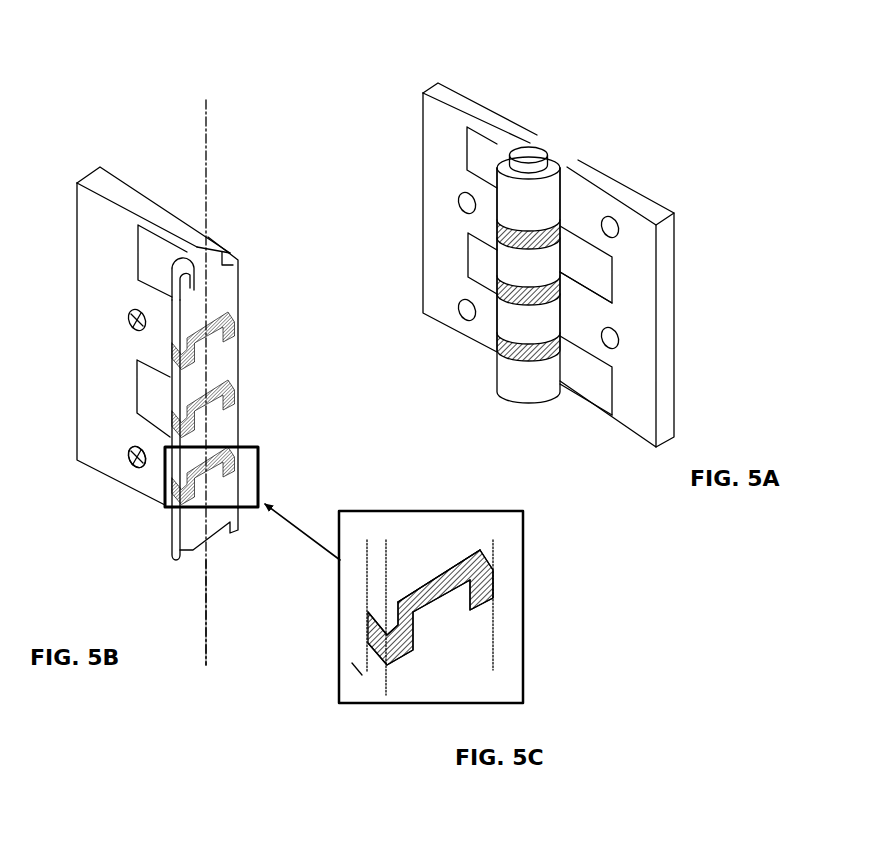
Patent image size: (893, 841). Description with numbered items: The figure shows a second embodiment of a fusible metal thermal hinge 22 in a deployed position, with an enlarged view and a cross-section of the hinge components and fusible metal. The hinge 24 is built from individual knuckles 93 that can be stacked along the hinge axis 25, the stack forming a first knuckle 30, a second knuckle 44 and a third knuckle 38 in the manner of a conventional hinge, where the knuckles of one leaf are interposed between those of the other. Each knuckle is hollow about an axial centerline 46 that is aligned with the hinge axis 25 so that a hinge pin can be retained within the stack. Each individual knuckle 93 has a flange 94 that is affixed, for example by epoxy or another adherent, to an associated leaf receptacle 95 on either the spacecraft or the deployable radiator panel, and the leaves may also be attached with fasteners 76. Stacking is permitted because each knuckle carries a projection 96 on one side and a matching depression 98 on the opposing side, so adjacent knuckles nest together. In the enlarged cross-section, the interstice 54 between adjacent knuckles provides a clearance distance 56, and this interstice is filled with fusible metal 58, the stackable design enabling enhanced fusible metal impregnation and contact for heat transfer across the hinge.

In FIG. 5A, the fusible metal thermal hinge 22 is at (537, 100).
In FIG. 5B, the fusible metal thermal hinge 22 is at (223, 190).
In FIG. 5B, the hinge 24 is at (153, 100).
In FIG. 5B, the hinge axis 25 is at (208, 597).
In FIG. 5A, the first knuckle 30 is at (543, 222).
In FIG. 5B, the first knuckle 30 is at (235, 307).
In FIG. 5A, the third knuckle 38 is at (543, 330).
In FIG. 5B, the third knuckle 38 is at (227, 423).
In FIG. 5A, the second knuckle 44 is at (543, 275).
In FIG. 5B, the second knuckle 44 is at (211, 387).
In FIG. 5B, the axial centerline 46 is at (206, 133).
In FIG. 5C, the interstice 54 is at (360, 617).
In FIG. 5C, the clearance distance 56 is at (500, 570).
In FIG. 5C, the fusible metal 58 is at (477, 565).
In FIG. 5B, the fasteners 76 is at (138, 452).
In FIG. 5A, the individual knuckles 93 is at (552, 257).
In FIG. 5A, the flange 94 is at (497, 165).
In FIG. 5B, the flange 94 is at (164, 269).
In FIG. 5A, the leaf receptacle 95 is at (605, 362).
In FIG. 5B, the projection 96 is at (220, 258).
In FIG. 5C, the projection 96 is at (448, 618).
In FIG. 5C, the depression 98 is at (428, 566).